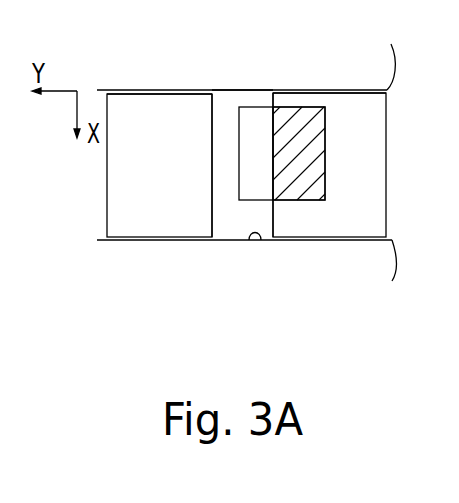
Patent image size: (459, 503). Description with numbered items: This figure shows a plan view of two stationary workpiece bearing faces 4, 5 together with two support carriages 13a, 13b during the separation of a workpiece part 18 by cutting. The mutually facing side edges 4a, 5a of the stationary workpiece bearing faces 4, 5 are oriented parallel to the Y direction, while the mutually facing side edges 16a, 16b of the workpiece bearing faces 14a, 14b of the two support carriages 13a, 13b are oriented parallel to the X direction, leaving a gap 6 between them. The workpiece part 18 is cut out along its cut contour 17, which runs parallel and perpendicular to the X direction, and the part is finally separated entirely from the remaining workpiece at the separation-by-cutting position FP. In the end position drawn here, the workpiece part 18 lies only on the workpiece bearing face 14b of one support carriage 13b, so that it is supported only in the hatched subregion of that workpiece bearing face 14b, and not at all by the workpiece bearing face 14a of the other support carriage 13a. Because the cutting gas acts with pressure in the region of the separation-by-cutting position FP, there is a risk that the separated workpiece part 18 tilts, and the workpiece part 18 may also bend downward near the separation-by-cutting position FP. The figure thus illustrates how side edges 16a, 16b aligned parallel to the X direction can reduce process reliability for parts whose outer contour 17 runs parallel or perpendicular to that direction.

The stationary workpiece bearing face 4 is at (97, 90).
The side edge 4a is at (242, 96).
The stationary workpiece bearing face 5 is at (97, 242).
The side edge 5a is at (251, 238).
The gap 6 is at (243, 216).
The support carriage 13a is at (96, 171).
The support carriage 13b is at (392, 186).
The workpiece bearing face 14a is at (158, 108).
The workpiece bearing face 14b is at (352, 107).
The side edge 16a is at (223, 220).
The side edge 16b is at (261, 219).
The cut contour 17 is at (238, 176).
The workpiece part 18 is at (256, 128).
The separation-by-cutting position FP is at (241, 156).